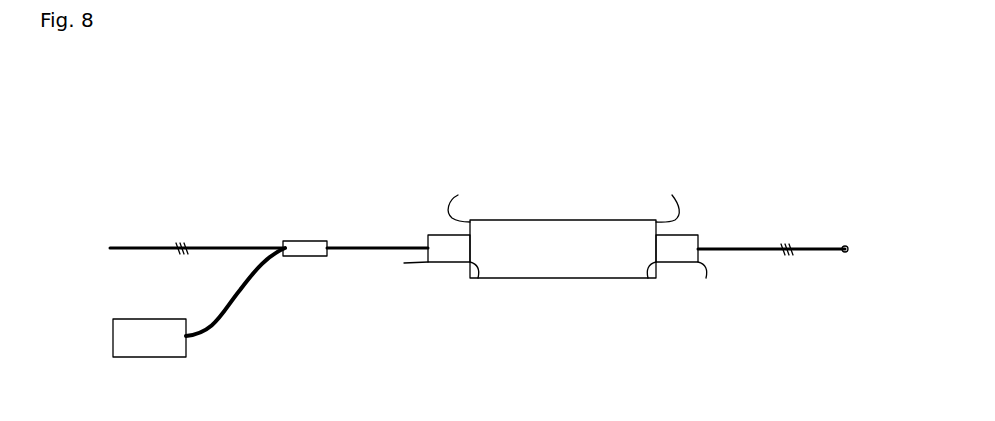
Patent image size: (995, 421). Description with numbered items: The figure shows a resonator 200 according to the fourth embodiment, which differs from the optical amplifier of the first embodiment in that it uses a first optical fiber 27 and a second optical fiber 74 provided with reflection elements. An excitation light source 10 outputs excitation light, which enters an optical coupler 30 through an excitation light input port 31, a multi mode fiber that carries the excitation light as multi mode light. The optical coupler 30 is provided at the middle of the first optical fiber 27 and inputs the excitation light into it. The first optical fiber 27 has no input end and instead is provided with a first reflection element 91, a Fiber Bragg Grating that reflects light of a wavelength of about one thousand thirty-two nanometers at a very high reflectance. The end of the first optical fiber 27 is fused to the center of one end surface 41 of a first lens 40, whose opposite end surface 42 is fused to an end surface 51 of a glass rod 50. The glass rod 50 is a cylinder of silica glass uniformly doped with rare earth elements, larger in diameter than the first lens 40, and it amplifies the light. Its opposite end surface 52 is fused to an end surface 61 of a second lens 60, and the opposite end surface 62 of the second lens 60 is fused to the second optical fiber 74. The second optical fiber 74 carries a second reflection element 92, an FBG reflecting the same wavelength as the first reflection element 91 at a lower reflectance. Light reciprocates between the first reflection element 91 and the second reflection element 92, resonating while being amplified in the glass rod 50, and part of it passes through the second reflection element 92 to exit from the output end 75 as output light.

The resonator 200 is at (678, 148).
The excitation light source 10 is at (170, 340).
The excitation light input port 31 is at (228, 303).
The optical coupler 30 is at (295, 250).
The first optical fiber 27 is at (345, 248).
The first reflection element 91 is at (183, 252).
The first lens 40 is at (448, 258).
The end surface 41 is at (404, 263).
The end surface 42 is at (476, 270).
The glass rod 50 is at (560, 228).
The end surface 51 is at (464, 196).
The end surface 52 is at (663, 196).
The second lens 60 is at (680, 242).
The end surface 61 is at (648, 270).
The end surface 62 is at (704, 270).
The second optical fiber 74 is at (740, 249).
The second reflection element 92 is at (785, 252).
The output end 75 is at (843, 252).